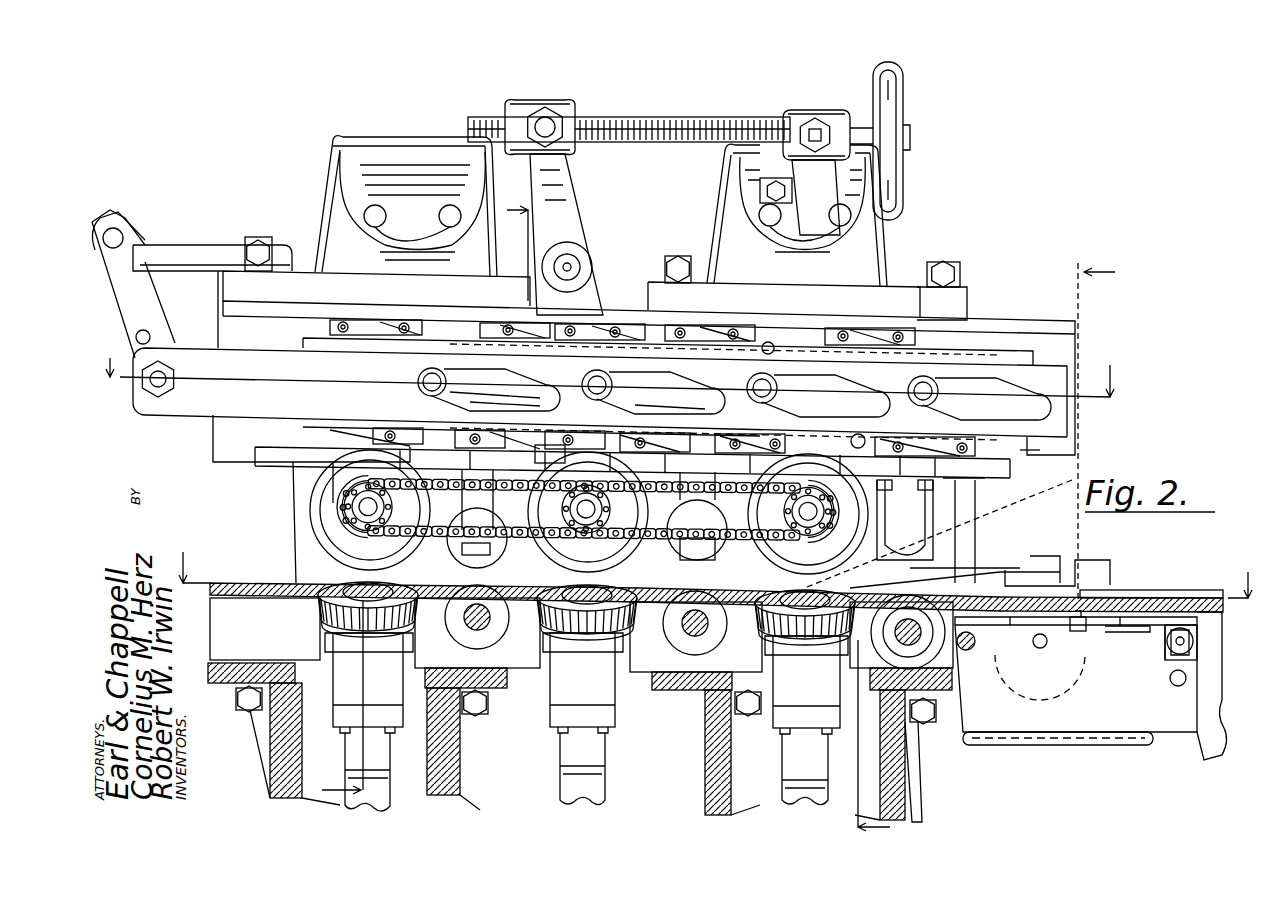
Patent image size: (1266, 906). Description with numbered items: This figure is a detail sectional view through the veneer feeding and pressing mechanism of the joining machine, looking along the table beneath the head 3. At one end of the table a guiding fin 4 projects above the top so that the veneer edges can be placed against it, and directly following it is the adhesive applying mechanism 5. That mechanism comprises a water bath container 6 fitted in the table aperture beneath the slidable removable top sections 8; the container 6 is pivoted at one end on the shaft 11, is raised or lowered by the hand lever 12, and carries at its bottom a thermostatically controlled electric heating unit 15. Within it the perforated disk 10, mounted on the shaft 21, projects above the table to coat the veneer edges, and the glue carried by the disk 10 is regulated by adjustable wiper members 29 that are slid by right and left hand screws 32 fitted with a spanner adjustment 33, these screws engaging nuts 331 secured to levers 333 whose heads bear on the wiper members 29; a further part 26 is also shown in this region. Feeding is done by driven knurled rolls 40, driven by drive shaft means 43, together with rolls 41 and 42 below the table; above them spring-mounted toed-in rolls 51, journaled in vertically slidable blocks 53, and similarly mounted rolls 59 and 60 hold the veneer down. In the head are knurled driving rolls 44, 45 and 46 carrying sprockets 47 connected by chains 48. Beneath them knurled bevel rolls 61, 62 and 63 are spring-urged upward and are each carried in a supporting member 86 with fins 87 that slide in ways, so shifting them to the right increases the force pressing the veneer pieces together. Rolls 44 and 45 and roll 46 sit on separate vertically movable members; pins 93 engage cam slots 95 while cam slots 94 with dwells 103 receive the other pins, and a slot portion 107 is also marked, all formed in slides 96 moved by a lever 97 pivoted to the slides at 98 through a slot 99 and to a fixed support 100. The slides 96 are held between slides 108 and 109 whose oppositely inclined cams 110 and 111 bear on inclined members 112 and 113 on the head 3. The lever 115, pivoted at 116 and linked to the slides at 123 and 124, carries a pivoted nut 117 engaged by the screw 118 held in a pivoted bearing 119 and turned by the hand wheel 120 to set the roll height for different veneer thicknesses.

The head 3 is at (1073, 445).
The guiding fin 4 is at (1122, 597).
The adhesive applying mechanism 5 is at (1117, 753).
The water bath container 6 is at (417, 489).
The slidable removable top sections 8 is at (1167, 598).
The disk 10 is at (1090, 677).
The shaft 11 is at (968, 648).
The hand lever 12 is at (1207, 725).
The thermostatically controlled electric heating unit 15 is at (983, 737).
The shaft 21 is at (1040, 650).
The pin 26 is at (1178, 686).
The adjustable wiper members 29 is at (1078, 630).
The right and left hand screws 32 is at (1190, 643).
The spanner adjustment 33 is at (1173, 657).
The driven knurled rolls 40 is at (932, 655).
The roll 41 is at (717, 635).
The roll 42 is at (490, 628).
The drive shaft means 43 is at (927, 733).
The knurled driving roll 44 is at (328, 528).
The knurled driving roll 45 is at (613, 553).
The knurled driving roll 46 is at (782, 555).
The sprockets 47 is at (365, 528).
The chains 48 is at (442, 537).
The toed-in rolls 51 is at (930, 548).
The blocks 53 is at (928, 517).
The roll 59 is at (682, 552).
The roll 60 is at (487, 552).
The bevel roll 61 is at (313, 610).
The bevel roll 62 is at (587, 648).
The bevel roll 63 is at (807, 620).
The supporting member 86 is at (393, 702).
The fins 87 is at (348, 647).
The pins 93 is at (418, 380).
The cam slots 94 is at (487, 374).
The cam slots 95 is at (838, 395).
The slides 96 is at (1050, 372).
The lever 97 is at (140, 283).
The pivot 98 is at (158, 387).
The slot 99 is at (147, 333).
The fixed support 100 is at (122, 235).
The dwells 103 is at (447, 399).
The slot 107 is at (935, 409).
The slide 108 is at (323, 343).
The slide 109 is at (307, 420).
The inclined cam 110 is at (430, 323).
The inclined cam 111 is at (533, 447).
The inclined member 112 is at (620, 330).
The inclined member 113 is at (507, 442).
The lever 115 is at (573, 214).
The pivot 116 is at (560, 399).
The pivoted nut 117 is at (567, 112).
The screw 118 is at (618, 121).
The pivoted bearing 119 is at (796, 114).
The hand wheel 120 is at (905, 100).
The pivot 123 is at (770, 342).
The pivot 124 is at (863, 435).
The nuts 331 is at (1190, 633).
The levers 333 is at (1147, 618).